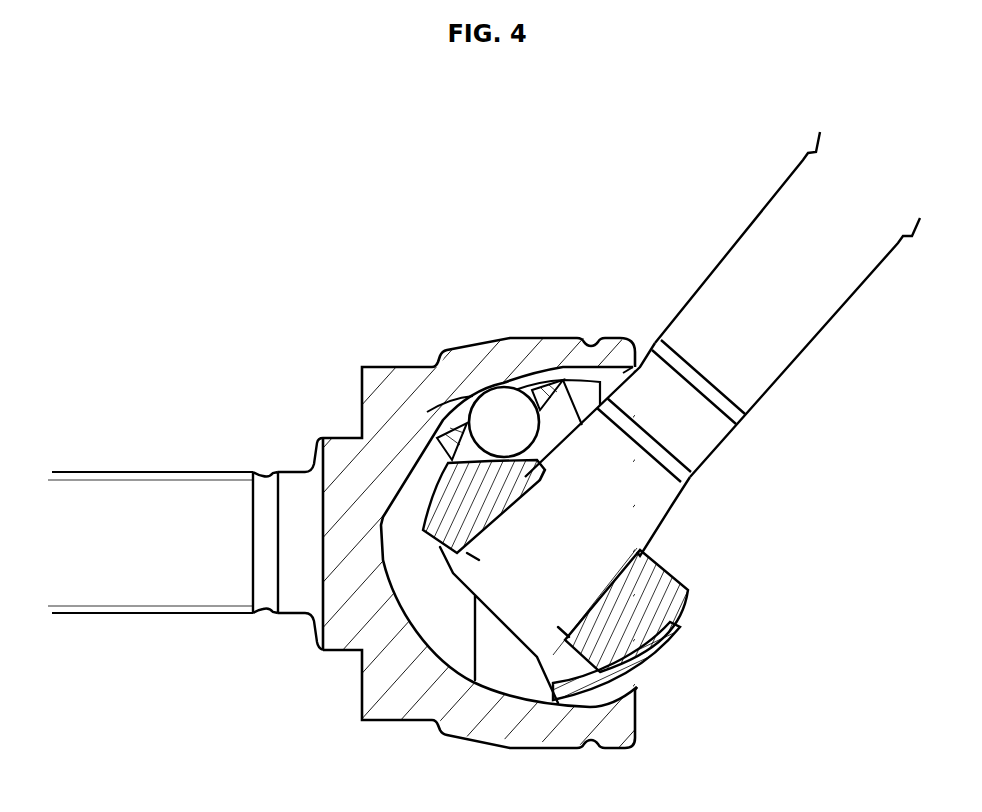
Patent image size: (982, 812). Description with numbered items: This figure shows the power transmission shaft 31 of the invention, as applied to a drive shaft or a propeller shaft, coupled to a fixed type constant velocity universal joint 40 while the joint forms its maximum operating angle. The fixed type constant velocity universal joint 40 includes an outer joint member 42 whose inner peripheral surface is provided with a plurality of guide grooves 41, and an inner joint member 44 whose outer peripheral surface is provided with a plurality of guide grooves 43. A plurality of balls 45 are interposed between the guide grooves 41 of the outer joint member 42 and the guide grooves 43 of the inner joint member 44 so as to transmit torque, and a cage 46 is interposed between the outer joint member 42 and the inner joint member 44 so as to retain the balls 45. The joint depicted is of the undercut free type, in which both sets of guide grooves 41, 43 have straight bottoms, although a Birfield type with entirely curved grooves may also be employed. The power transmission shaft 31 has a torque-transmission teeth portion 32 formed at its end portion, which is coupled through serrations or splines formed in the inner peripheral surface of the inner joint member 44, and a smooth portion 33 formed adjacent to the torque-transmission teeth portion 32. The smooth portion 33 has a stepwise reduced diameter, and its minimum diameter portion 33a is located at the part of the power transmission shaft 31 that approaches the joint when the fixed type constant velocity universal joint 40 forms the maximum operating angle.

The fixed type constant velocity universal joint 40 is at (446, 285).
The guide grooves 41 is at (566, 372).
The outer joint member 42 is at (522, 352).
The guide grooves 43 is at (440, 497).
The inner joint member 44 is at (443, 465).
The balls 45 is at (500, 388).
The cage 46 is at (452, 400).
The power transmission shaft 31 is at (717, 212).
The torque-transmission teeth portion 32 is at (560, 530).
The smooth portion 33 is at (710, 412).
The minimum diameter portion 33a is at (697, 474).